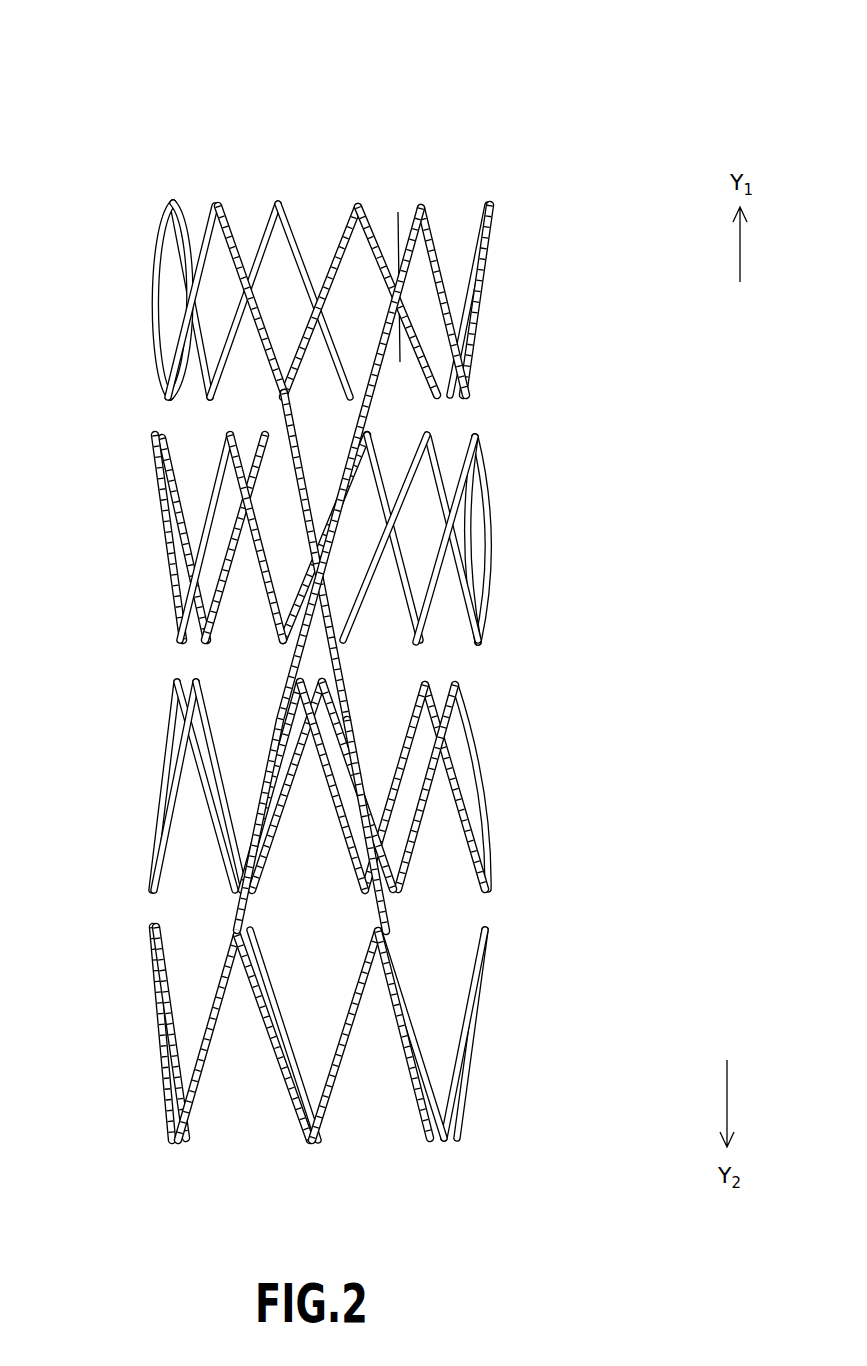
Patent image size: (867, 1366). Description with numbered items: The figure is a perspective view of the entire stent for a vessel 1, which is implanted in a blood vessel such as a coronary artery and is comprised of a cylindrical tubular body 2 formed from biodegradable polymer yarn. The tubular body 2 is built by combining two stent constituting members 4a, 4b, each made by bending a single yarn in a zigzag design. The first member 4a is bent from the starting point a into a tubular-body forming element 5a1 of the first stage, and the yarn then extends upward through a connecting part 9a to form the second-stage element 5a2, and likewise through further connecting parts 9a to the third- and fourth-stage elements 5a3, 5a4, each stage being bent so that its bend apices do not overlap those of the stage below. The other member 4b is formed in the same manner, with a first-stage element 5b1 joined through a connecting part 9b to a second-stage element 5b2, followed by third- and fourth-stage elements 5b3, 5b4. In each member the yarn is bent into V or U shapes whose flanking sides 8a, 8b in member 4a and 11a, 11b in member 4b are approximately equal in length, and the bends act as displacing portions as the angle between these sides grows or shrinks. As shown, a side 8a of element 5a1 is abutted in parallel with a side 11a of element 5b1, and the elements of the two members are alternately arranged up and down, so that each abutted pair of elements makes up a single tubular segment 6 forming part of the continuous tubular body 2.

The stent for a vessel 1 is at (441, 64).
The tubular body 2 is at (168, 722).
The stent constituting member 4a is at (493, 303).
The stent constituting member 4b is at (158, 277).
The tubular-body forming element of the first stage 5a1 is at (158, 1000).
The tubular-body forming element of the second stage 5a2 is at (480, 812).
The tubular-body forming element of the third stage 5a3 is at (170, 545).
The tubular-body forming element of the fourth stage 5a4 is at (497, 234).
The tubular-body forming element of the first stage 5b1 is at (480, 1050).
The tubular-body forming element of the second stage 5b2 is at (158, 812).
The tubular-body forming element of the third stage 5b3 is at (487, 566).
The tubular-body forming element of the fourth stage 5b4 is at (167, 228).
The tubular segment 6 is at (160, 338).
The side 8a is at (237, 257).
The side 8b is at (232, 570).
The connecting part 9a is at (272, 413).
The connecting part 9b is at (293, 663).
The side 11a is at (213, 205).
The side 11b is at (490, 513).
The starting point a is at (441, 1146).